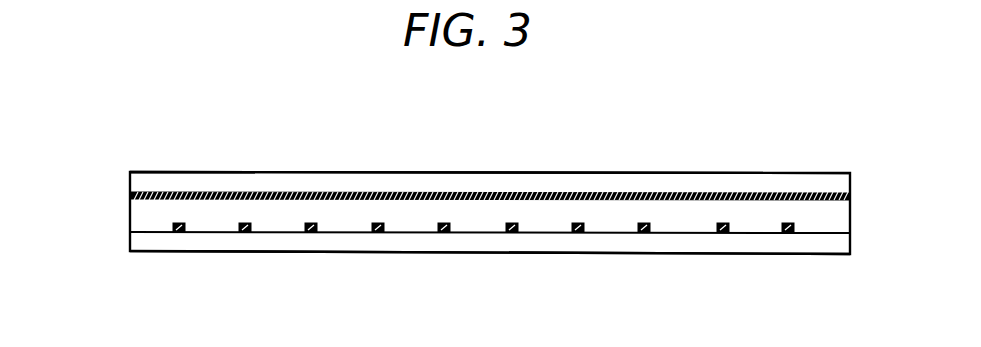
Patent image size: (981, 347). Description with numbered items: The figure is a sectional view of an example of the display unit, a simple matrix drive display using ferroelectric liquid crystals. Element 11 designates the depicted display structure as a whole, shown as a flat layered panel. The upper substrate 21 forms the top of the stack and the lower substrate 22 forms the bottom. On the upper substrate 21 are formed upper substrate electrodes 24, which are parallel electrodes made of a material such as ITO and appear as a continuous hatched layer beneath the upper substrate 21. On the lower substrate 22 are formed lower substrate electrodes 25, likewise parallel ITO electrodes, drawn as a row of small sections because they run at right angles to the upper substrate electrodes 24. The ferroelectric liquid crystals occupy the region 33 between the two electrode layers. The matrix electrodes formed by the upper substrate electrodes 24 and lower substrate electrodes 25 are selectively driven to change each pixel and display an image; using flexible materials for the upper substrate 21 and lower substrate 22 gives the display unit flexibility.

The liquid crystal panel 11 is at (480, 168).
The upper substrate 21 is at (138, 185).
The lower substrate 22 is at (138, 245).
The upper substrate electrodes 24 is at (620, 192).
The lower substrate electrodes 25 is at (575, 233).
The gap region 33 is at (423, 212).